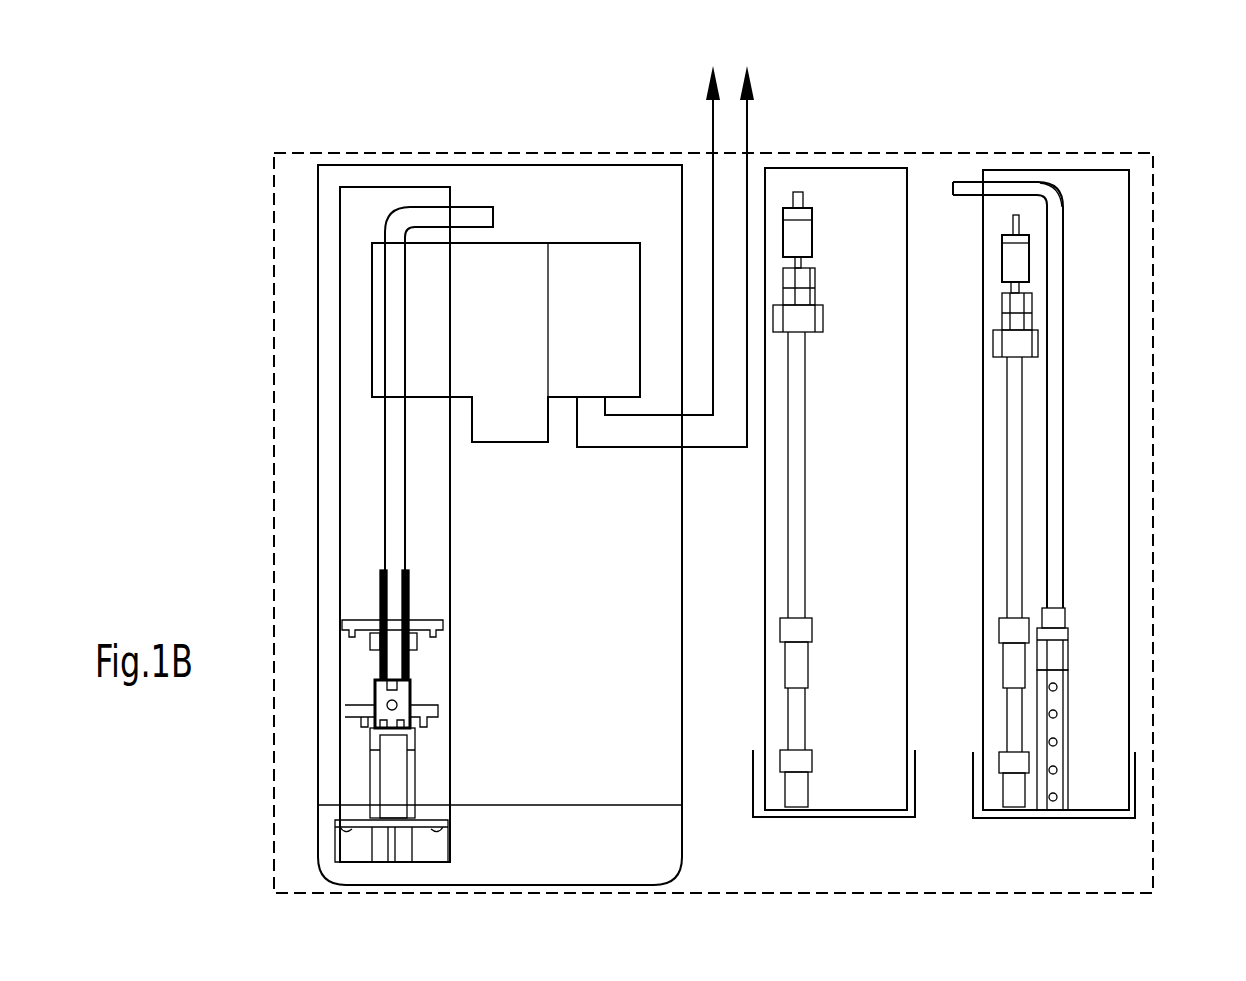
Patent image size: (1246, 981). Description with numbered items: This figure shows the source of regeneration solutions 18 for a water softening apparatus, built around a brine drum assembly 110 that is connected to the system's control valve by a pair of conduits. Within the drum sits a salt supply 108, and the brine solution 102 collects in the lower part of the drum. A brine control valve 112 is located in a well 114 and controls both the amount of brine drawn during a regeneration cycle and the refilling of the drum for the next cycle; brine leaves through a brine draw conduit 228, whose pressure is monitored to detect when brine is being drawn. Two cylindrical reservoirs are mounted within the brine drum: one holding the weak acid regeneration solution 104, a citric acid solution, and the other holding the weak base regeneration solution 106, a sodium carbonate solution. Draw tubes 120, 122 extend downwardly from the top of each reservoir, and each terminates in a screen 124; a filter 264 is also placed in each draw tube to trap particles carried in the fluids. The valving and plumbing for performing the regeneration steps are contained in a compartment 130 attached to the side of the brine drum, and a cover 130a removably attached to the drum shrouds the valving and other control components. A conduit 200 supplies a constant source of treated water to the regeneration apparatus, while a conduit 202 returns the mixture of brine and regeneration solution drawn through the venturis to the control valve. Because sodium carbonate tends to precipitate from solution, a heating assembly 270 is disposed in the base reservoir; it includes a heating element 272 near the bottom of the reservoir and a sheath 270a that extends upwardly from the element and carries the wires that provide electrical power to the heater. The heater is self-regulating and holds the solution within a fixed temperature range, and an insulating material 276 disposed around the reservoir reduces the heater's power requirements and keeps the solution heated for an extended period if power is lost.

The source of regeneration solutions 18 is at (644, 495).
The source of brine solution 102 is at (640, 848).
The weak acid regeneration solution 104 is at (866, 496).
The weak base regeneration solution 106 is at (1120, 481).
The salt supply 108 is at (612, 711).
The brine drum assembly 110 is at (858, 152).
The brine control valve 112 is at (432, 691).
The well 114 is at (450, 503).
The draw tube 120 is at (797, 437).
The draw tube 122 is at (1011, 452).
The screen 124 is at (797, 788).
The compartment 130 is at (562, 338).
The cover 130a is at (548, 243).
The conduit 200 is at (710, 135).
The conduit 202 is at (750, 122).
The brine draw conduit 228 is at (478, 207).
The filter 264 is at (800, 231).
The heating assembly 270 is at (1078, 430).
The sheath 270a is at (1055, 336).
The heating element 272 is at (1053, 733).
The insulating material 276 is at (1129, 213).